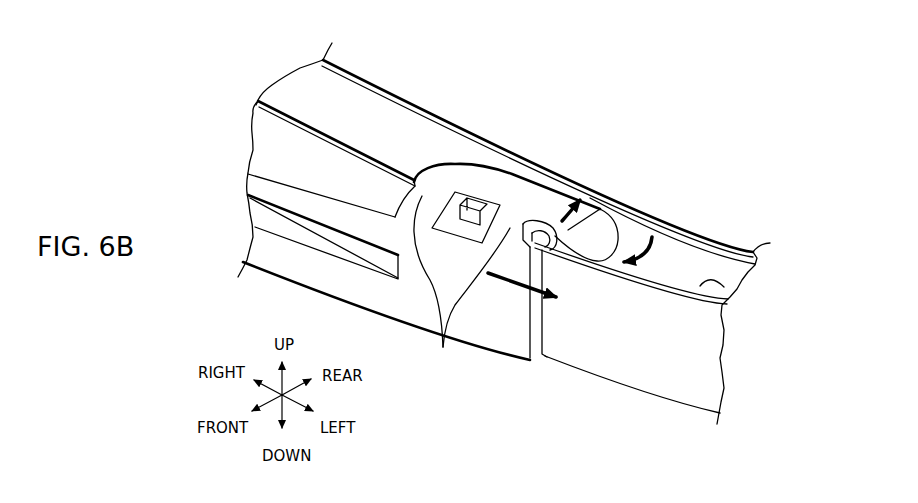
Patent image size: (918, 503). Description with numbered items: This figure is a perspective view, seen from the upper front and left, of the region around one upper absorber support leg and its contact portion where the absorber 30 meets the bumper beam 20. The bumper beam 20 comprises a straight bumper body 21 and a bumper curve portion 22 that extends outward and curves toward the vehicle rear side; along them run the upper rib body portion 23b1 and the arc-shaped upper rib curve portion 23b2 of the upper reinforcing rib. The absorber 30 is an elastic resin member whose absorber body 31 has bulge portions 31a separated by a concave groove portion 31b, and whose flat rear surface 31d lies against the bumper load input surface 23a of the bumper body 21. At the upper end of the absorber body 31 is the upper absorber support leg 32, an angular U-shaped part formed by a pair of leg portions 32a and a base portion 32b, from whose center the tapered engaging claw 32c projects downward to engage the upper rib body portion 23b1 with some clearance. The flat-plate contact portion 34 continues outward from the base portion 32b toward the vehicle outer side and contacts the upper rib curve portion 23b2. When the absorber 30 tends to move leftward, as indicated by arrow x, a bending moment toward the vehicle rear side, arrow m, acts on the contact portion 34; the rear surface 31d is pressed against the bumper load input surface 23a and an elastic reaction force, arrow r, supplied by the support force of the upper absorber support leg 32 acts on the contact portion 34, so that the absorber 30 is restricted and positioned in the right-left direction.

The bumper beam 20 is at (398, 86).
The bumper body 21 is at (343, 97).
The bumper curve portion 22 is at (710, 267).
The bumper load input surface 23a is at (285, 117).
The upper rib body portion 23b1 is at (372, 156).
The upper rib curve portion 23b2 is at (730, 295).
The absorber 30 is at (403, 330).
The absorber body 31 is at (295, 158).
The bulge portion 31a is at (347, 282).
The concave groove portion 31b is at (298, 235).
The rear surface 31d is at (300, 128).
The upper absorber support leg 32 is at (465, 160).
The leg portion 32a is at (462, 284).
The base portion 32b is at (518, 186).
The engaging claw 32c is at (481, 200).
The contact portion 34 is at (603, 232).
The bending moment arrow m is at (570, 206).
The elastic reaction force arrow r is at (645, 247).
The leftward movement arrow x is at (520, 290).